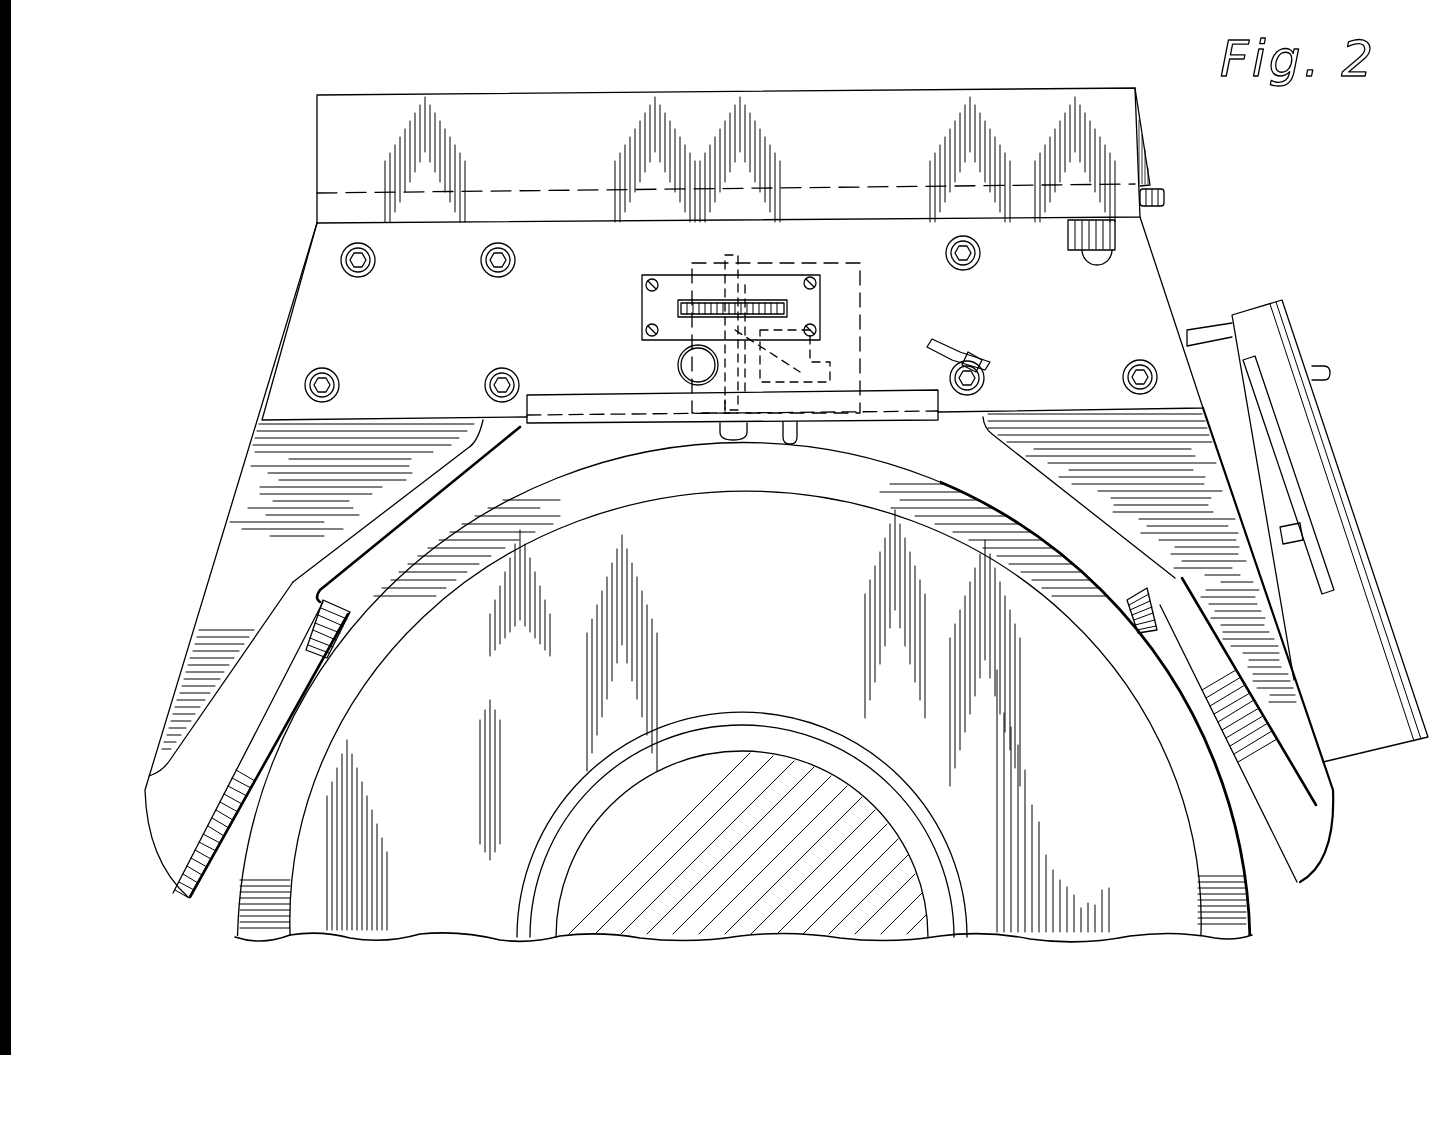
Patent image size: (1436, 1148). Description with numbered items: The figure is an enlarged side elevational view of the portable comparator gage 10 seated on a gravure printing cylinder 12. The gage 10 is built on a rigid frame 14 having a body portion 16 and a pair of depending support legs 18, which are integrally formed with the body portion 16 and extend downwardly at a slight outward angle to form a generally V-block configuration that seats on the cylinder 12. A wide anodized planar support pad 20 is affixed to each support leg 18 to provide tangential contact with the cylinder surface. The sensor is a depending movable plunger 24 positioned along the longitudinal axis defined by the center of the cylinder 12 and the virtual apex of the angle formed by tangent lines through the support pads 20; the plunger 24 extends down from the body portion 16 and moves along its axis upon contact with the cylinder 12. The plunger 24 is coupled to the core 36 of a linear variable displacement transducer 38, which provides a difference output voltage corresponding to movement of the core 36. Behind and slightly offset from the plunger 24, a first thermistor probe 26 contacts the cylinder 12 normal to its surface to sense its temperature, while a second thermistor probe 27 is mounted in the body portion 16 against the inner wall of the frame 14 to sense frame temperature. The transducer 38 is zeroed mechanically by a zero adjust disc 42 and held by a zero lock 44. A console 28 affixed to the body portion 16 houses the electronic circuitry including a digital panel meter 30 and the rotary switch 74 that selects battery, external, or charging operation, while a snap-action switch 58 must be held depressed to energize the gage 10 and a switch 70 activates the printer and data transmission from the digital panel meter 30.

The portable comparator gage 10 is at (160, 500).
The gravure printing cylinder 12 is at (240, 895).
The rigid frame 14 is at (293, 146).
The body portion 16 is at (296, 305).
The support legs 18 is at (1205, 490).
The planar support pad 20 is at (280, 722).
The movable plunger 24 is at (733, 442).
The first thermistor probe 26 is at (794, 446).
The second thermistor probe 27 is at (957, 345).
The console 28 is at (570, 106).
The digital panel meter 30 is at (1152, 155).
The core 36 is at (697, 400).
The linear variable displacement transducer 38 is at (838, 262).
The zero adjust disc 42 is at (688, 300).
The zero lock 44 is at (678, 367).
The snap-action switch 58 is at (1292, 546).
The switch 70 is at (1330, 372).
The rotary switch 74 is at (1168, 203).